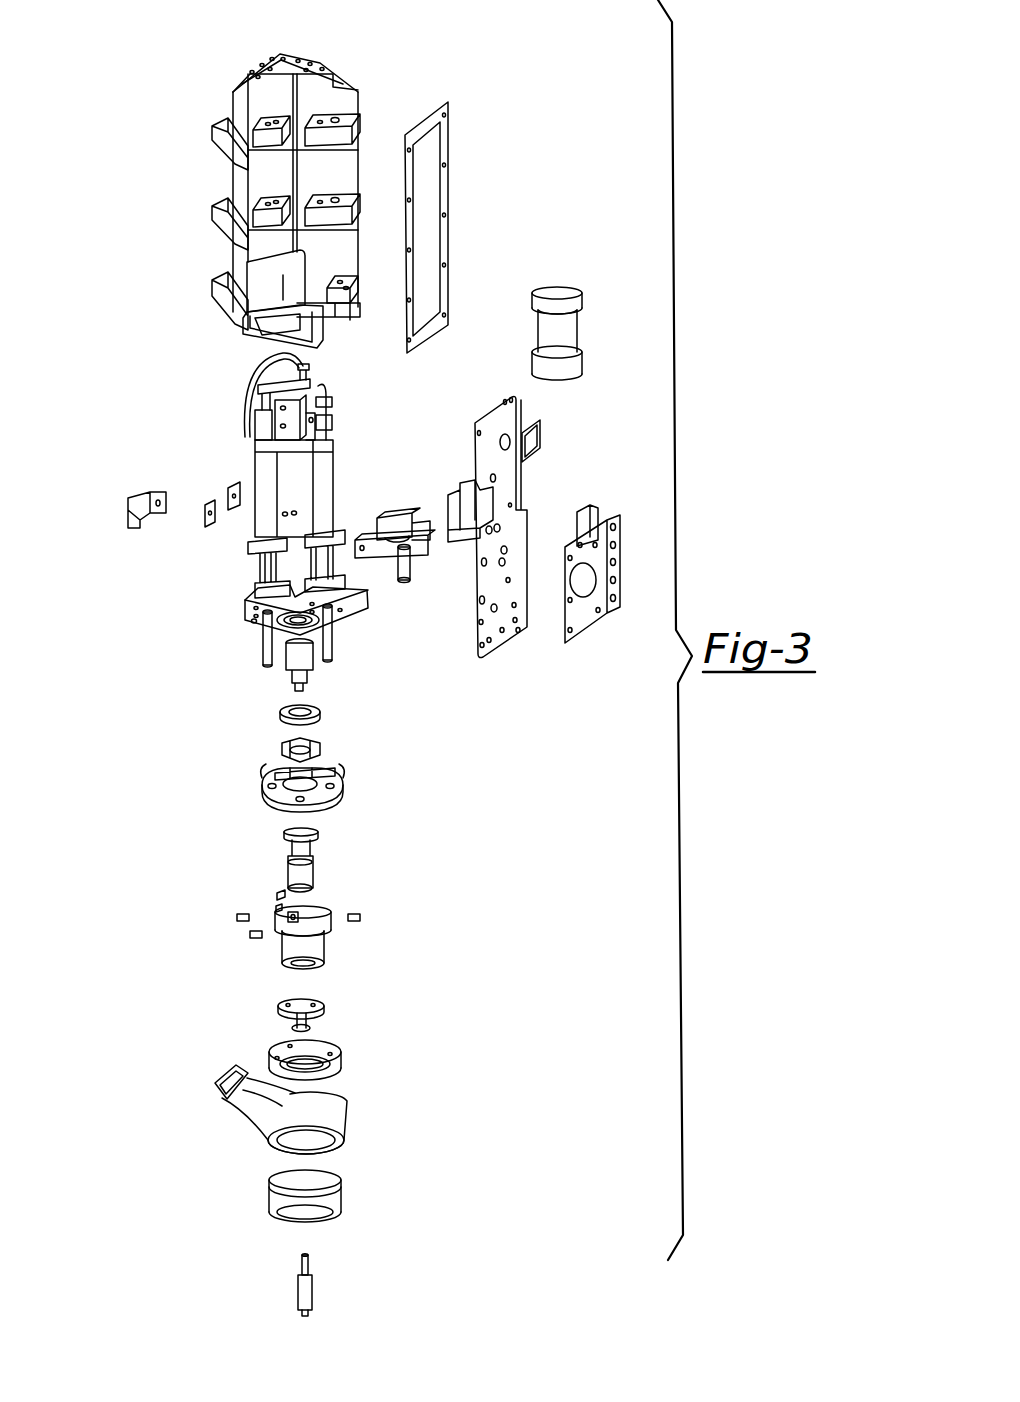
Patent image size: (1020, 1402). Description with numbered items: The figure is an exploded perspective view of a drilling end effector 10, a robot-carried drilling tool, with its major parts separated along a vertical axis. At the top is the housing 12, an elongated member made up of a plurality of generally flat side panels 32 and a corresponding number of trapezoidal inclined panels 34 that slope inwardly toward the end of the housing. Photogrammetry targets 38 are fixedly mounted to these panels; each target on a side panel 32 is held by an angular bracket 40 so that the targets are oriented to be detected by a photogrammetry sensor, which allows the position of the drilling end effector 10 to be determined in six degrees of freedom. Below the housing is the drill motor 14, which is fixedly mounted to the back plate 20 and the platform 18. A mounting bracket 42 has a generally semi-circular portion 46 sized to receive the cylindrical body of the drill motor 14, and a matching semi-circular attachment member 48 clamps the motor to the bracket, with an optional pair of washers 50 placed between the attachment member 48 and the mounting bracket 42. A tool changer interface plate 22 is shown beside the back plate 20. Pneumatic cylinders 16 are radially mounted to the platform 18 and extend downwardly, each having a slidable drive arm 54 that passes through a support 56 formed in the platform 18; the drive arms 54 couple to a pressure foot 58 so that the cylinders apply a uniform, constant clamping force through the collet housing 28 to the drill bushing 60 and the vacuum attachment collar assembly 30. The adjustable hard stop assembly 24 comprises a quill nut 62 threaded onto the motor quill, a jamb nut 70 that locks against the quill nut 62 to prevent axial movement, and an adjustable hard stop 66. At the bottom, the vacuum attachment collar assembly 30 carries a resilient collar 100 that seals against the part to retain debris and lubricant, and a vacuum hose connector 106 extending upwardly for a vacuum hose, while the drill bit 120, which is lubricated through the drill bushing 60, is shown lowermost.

The drilling end effector 10 is at (168, 699).
The housing 12 is at (208, 93).
The drill motor 14 is at (320, 476).
The pneumatic cylinders 16 is at (336, 536).
The platform 18 is at (243, 608).
The back plate 20 is at (492, 408).
The tool changer interface plate 22 is at (612, 546).
The adjustable hard stop assembly 24 is at (246, 862).
The collet housing 28 is at (282, 951).
The vacuum attachment collar assembly 30 is at (222, 1144).
The side panels 32 is at (350, 101).
The inclined panels 34 is at (263, 68).
The photogrammetry target 38 is at (283, 53).
The angular bracket 40 is at (325, 146).
The mounting bracket 42 is at (418, 571).
The semi-circular portion 46 is at (378, 556).
The attachment member 48 is at (137, 482).
The washers 50 is at (233, 488).
The drive arm 54 is at (335, 650).
The support 56 is at (250, 624).
The pressure foot 58 is at (340, 789).
The drill bushing 60 is at (330, 1012).
The quill nut 62 is at (325, 750).
The adjustable hard stop 66 is at (315, 851).
The jamb nut 70 is at (320, 713).
The collar 100 is at (343, 1200).
The vacuum hose connector 106 is at (233, 1105).
The drill bit 120 is at (298, 1298).